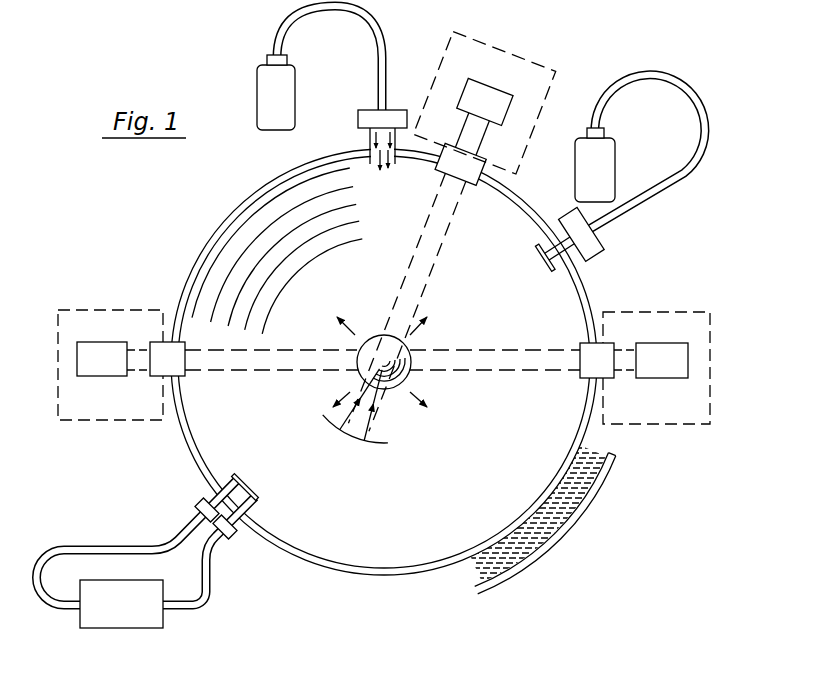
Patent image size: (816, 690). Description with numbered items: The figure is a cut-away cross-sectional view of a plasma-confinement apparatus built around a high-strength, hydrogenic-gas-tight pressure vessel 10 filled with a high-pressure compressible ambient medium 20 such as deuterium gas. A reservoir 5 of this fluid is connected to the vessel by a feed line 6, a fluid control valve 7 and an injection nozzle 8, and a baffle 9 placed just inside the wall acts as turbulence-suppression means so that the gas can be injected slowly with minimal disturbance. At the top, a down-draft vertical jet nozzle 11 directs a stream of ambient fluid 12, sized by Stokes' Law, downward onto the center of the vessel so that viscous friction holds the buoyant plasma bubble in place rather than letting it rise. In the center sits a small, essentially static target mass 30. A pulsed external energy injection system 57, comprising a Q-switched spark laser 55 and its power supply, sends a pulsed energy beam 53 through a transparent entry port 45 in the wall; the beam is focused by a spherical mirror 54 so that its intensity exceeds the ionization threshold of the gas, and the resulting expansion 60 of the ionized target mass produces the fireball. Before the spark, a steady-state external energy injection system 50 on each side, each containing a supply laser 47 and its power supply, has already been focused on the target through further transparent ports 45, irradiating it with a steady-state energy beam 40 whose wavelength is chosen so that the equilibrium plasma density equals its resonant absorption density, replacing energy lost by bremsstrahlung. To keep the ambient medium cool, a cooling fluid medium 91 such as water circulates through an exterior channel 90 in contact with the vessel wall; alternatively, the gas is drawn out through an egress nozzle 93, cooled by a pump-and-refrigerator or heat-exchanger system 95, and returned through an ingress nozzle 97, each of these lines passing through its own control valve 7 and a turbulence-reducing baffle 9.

The reservoir 5 is at (282, 106).
The feed line 6 is at (386, 28).
The fluid control valve 7 is at (388, 128).
The nozzle 8 is at (564, 222).
The baffle 9 is at (537, 258).
The pressure vessel 10 is at (226, 216).
The down-draft vertical jet nozzle 11 is at (367, 136).
The bubble-centering fluid flow 12 is at (392, 166).
The ambient filling medium 20 is at (412, 507).
The target mass 30 is at (410, 345).
The steady-state energy beam 40 is at (298, 350).
The entry port 45 is at (178, 370).
The supply laser 47 is at (113, 370).
The steady-state external energy injection means 50 is at (160, 420).
The pulsed energy beam 53 is at (582, 344).
The focusing means 54 is at (364, 445).
The pulsed laser 55 is at (478, 119).
The pulsed external energy injection means 57 is at (484, 103).
The expansion of mass 60 is at (383, 409).
The exterior channel 90 is at (571, 542).
The cooling fluid medium 91 is at (535, 558).
The ambient fluid egress means 93 is at (228, 534).
The ambient fluid cooling-and-circulation means 95 is at (132, 615).
The ambient fluid ingress means 97 is at (204, 500).